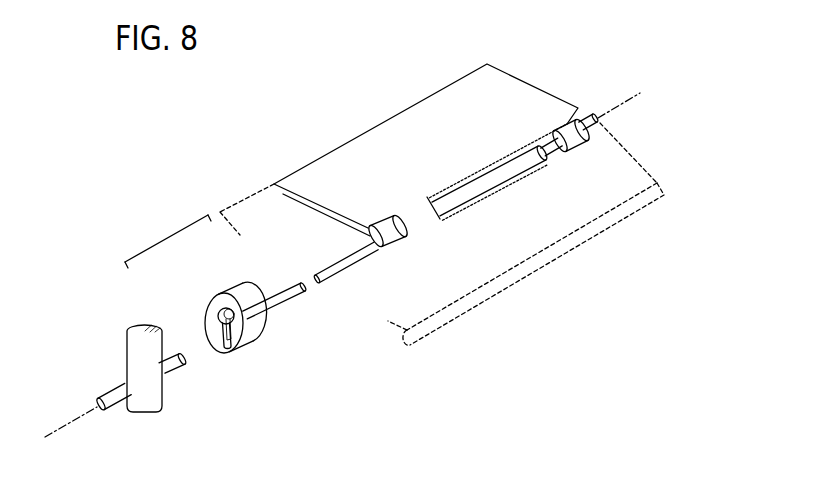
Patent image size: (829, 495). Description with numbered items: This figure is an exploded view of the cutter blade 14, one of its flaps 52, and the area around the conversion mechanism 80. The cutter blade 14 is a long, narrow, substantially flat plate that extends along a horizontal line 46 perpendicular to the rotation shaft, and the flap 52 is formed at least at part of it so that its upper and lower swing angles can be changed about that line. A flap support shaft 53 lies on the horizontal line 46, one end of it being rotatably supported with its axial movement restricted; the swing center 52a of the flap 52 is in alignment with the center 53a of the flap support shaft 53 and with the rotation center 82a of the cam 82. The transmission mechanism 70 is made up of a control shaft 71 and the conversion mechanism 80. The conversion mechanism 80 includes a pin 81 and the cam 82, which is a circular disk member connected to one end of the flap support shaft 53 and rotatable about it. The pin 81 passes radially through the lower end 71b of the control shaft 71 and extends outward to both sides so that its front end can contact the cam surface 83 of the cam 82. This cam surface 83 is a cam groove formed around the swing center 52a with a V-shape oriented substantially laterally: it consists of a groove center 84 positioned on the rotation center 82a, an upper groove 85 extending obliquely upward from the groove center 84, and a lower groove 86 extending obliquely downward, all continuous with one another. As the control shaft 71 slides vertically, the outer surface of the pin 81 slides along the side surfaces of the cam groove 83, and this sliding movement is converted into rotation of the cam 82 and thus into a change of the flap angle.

The cutter blade 14 is at (547, 270).
The horizontal line 46 is at (72, 422).
The flap 52 is at (425, 147).
The swing center 52a is at (357, 92).
The flap support shaft 53 is at (482, 201).
The center of the flap support shaft 53a is at (623, 88).
The transmission mechanism 70 is at (106, 345).
The control shaft 71 is at (127, 345).
The lower end of the control shaft 71b is at (125, 357).
The conversion mechanism 80 is at (415, 244).
The pin 81 is at (181, 377).
The cam 82 is at (437, 210).
The rotation center of the cam 82a is at (228, 306).
The cam surface 83 is at (169, 238).
The groove center 84 is at (207, 318).
The upper groove 85 is at (452, 197).
The lower groove 86 is at (203, 351).